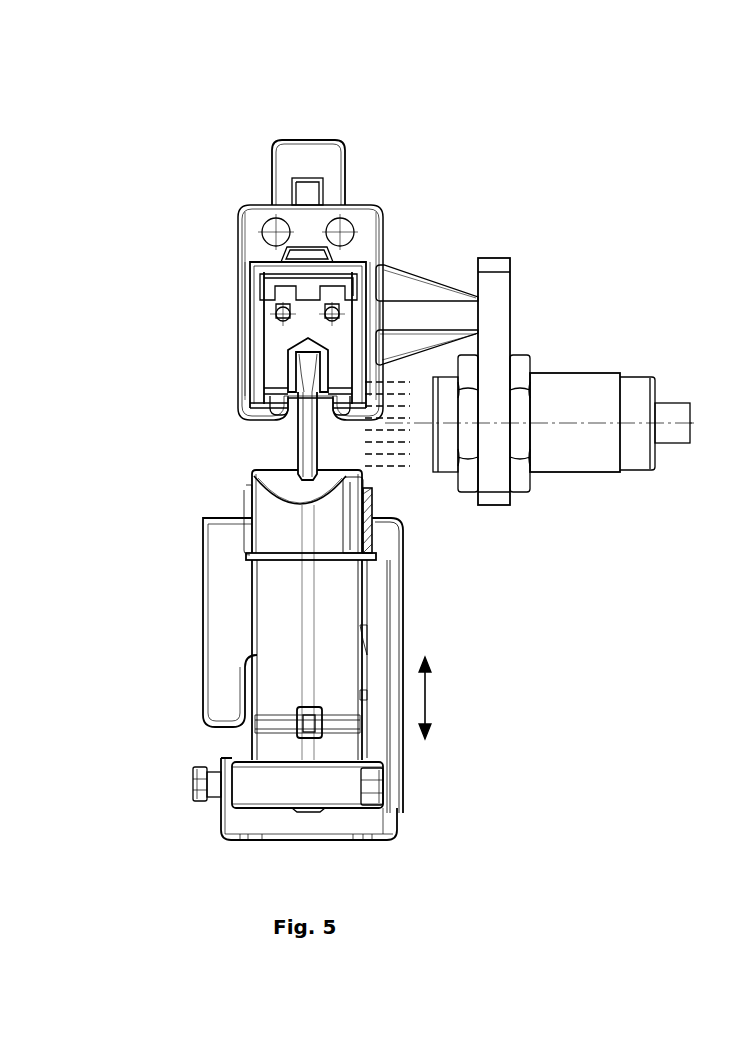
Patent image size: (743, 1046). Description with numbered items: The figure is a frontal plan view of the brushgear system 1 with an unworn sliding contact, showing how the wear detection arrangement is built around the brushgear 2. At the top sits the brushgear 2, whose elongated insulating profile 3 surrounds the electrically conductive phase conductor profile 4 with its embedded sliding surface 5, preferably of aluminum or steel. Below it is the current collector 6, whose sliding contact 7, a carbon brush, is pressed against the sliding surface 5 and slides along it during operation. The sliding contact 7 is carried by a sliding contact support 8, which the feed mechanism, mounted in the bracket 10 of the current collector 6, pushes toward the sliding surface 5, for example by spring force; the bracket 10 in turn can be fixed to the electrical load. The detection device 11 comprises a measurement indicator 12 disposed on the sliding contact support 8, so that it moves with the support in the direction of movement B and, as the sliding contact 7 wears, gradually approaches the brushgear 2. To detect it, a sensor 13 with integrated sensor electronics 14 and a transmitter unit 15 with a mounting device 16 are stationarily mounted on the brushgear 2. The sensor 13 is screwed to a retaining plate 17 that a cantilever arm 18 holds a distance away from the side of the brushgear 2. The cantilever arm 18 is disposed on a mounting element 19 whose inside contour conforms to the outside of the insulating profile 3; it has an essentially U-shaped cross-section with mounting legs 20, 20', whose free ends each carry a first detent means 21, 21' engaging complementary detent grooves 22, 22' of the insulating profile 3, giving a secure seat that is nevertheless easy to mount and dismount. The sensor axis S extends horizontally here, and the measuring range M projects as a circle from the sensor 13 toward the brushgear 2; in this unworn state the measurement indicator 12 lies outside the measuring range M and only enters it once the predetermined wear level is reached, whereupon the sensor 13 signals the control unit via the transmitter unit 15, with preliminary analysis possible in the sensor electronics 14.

The brushgear system 1 is at (140, 143).
The brushgear 2 is at (255, 243).
The insulating profile 3 is at (258, 272).
The phase conductor profile 4 is at (270, 300).
The sliding surface 5 is at (300, 336).
The current collector 6 is at (178, 748).
The sliding contact 7 is at (293, 443).
The sliding contact support 8 is at (256, 591).
The bracket 10 is at (220, 812).
The detection device 11 is at (588, 266).
The measurement indicator 12 is at (373, 548).
The sensor 13 is at (448, 471).
The sensor electronics 14 is at (576, 472).
The transmitter unit 15 is at (672, 446).
The mounting device 16 is at (293, 128).
The retaining plate 17 is at (506, 257).
The cantilever arm 18 is at (455, 285).
The mounting element 19 is at (352, 212).
The mounting leg 20 is at (416, 270).
The mounting leg 20' is at (184, 329).
The first detent means 21 is at (352, 426).
The first detent means 21' is at (205, 417).
The detent groove 22 is at (374, 267).
The detent groove 22' is at (205, 376).
The measuring range M is at (396, 474).
The sensor axis S is at (697, 421).
The direction of movement B is at (435, 698).